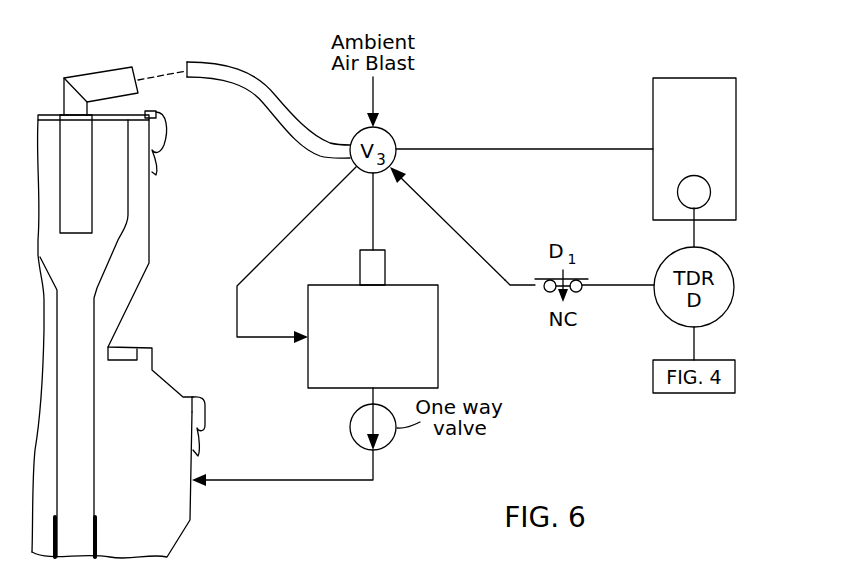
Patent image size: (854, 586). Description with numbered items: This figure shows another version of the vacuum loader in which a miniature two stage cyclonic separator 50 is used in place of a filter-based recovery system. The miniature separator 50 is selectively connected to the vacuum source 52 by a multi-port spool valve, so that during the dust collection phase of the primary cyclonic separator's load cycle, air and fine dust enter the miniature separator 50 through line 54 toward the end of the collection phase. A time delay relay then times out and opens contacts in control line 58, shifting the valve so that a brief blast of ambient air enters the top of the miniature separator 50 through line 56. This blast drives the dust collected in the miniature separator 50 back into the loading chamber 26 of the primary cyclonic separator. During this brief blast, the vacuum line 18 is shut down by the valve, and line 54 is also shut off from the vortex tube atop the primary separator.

The vacuum line 18 is at (500, 148).
The loading chamber 26 is at (192, 503).
The miniature two stage cyclonic separator 50 is at (328, 282).
The vacuum source 52 is at (677, 77).
The line 54 is at (300, 222).
The line 56 is at (373, 197).
The control line 58 is at (455, 233).